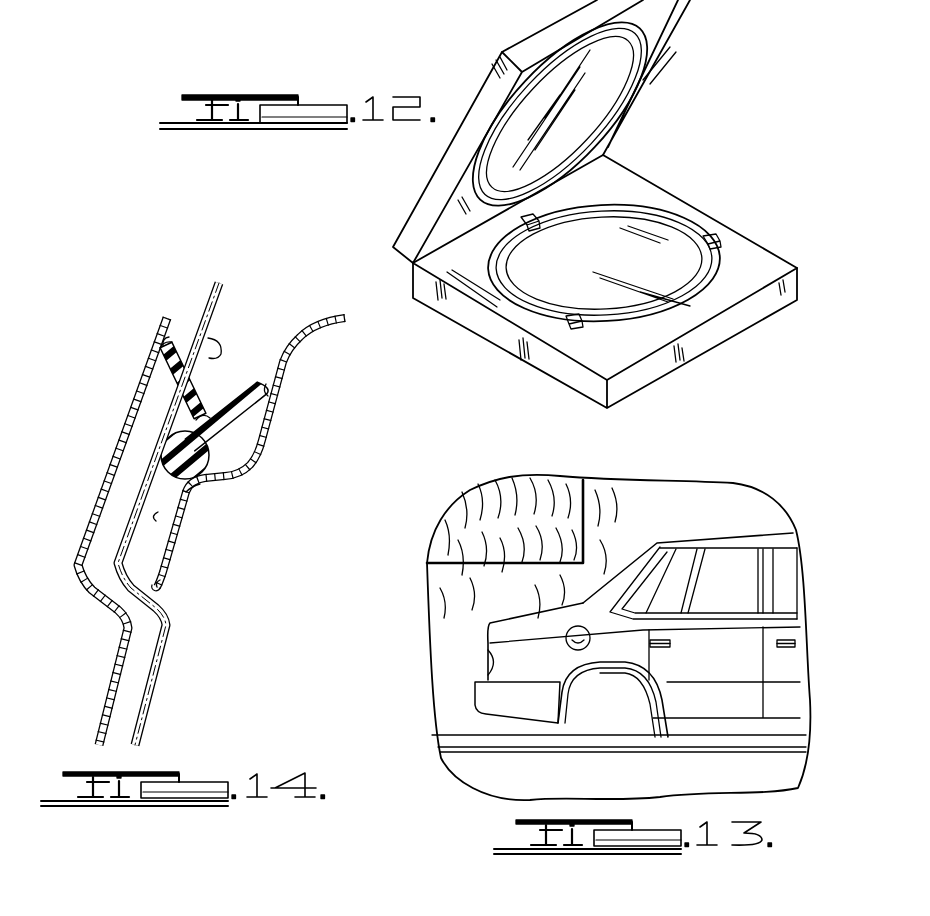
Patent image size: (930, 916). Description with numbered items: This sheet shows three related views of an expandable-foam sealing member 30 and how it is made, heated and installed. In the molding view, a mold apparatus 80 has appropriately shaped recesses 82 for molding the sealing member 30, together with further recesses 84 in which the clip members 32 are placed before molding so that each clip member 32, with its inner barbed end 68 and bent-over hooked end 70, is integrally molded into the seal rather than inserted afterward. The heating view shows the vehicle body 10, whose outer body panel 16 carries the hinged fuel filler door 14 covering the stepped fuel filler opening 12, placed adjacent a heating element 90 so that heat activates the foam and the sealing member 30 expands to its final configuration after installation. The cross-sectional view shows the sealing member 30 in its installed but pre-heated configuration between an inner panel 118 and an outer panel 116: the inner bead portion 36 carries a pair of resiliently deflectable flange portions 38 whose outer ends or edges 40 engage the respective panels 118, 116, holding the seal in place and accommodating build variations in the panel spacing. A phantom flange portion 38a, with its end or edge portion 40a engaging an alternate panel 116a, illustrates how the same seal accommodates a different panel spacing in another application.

In FIG. 13, the vehicle body 10 is at (500, 647).
In FIG. 13, the stepped fuel filler opening 12 is at (571, 647).
In FIG. 13, the fuel filler door 14 is at (591, 640).
In FIG. 13, the outer body panel 16 is at (512, 663).
In FIG. 14, the sealing member 30 is at (236, 451).
In FIG. 14, the clip member 32 is at (158, 517).
In FIG. 14, the inner bead portion 36 is at (217, 478).
In FIG. 14, the flange portion 38 is at (160, 378).
In FIG. 14, the flange portion (phantom) 38a is at (200, 360).
In FIG. 14, the outer end or edge of flange portion 40 is at (160, 348).
In FIG. 14, the end or edge portion of phantom flange 40a is at (225, 332).
In FIG. 14, the inner barbed end 68 is at (204, 416).
In FIG. 14, the bent-over hooked end 70 is at (163, 565).
In FIG. 12, the mold apparatus 80 is at (658, 198).
In FIG. 12, the recesses for molding the sealing member 82 is at (642, 68).
In FIG. 12, the recesses for pre-molding placement of clip members 84 is at (531, 220).
In FIG. 13, the heating element 90 is at (553, 490).
In FIG. 14, the outer panel 116 is at (110, 468).
In FIG. 14, the alternate panel 116a is at (222, 305).
In FIG. 14, the inner panel 118 is at (290, 358).